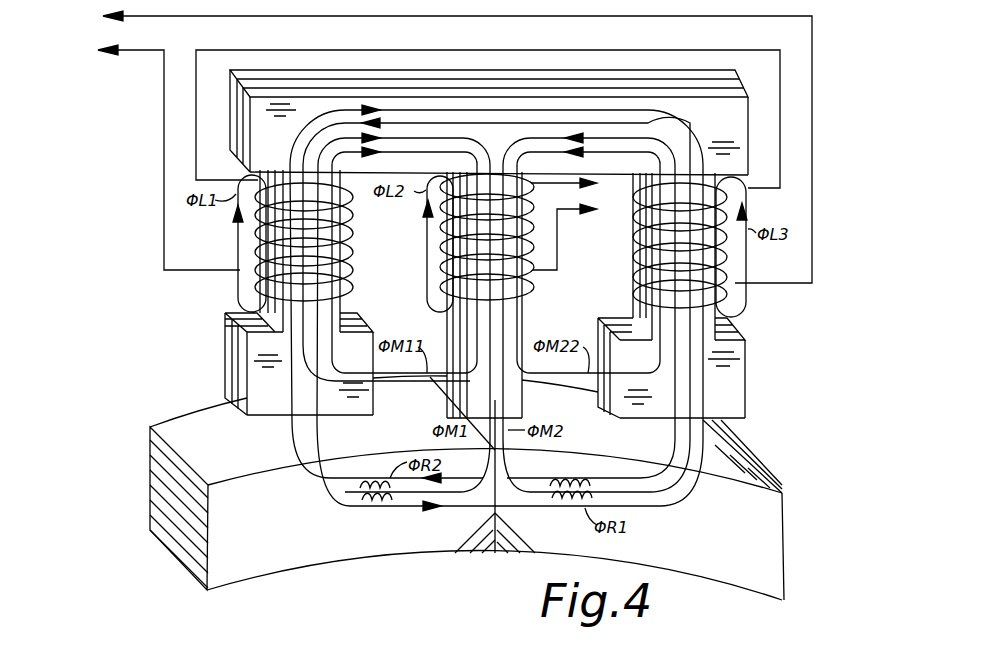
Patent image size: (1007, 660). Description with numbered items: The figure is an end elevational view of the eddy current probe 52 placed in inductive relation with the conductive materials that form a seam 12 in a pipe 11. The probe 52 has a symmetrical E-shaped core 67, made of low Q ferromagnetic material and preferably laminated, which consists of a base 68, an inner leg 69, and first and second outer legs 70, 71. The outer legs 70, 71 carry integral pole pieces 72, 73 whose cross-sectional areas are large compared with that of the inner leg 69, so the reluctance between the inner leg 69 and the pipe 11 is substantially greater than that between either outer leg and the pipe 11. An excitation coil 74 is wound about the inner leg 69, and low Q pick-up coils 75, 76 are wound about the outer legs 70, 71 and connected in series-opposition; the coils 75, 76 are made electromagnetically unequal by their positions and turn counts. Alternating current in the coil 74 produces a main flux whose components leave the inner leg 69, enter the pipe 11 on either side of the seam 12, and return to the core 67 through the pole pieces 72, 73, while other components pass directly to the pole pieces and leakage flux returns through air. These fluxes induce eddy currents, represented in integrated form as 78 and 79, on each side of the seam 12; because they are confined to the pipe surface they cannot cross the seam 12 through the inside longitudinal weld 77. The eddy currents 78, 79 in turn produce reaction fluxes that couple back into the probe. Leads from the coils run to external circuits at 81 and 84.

The pipe 11 is at (742, 462).
The seam 12 is at (490, 511).
The eddy current probe 52 is at (776, 118).
The E-shaped core 67 is at (723, 134).
The base 68 is at (734, 89).
The inner leg 69 is at (524, 315).
The first outer leg 70 is at (341, 296).
The second outer leg 71 is at (633, 288).
The pole piece 72 is at (226, 355).
The pole piece 73 is at (745, 367).
The excitation coil 74 is at (534, 199).
The pick-up coil 75 is at (343, 232).
The pick-up coil 76 is at (631, 251).
The inside longitudinal weld 77 is at (512, 540).
The eddy current 78 is at (372, 505).
The eddy current 79 is at (552, 478).
The connection to circuit 81 is at (455, 147).
The connection to circuit 84 is at (577, 222).